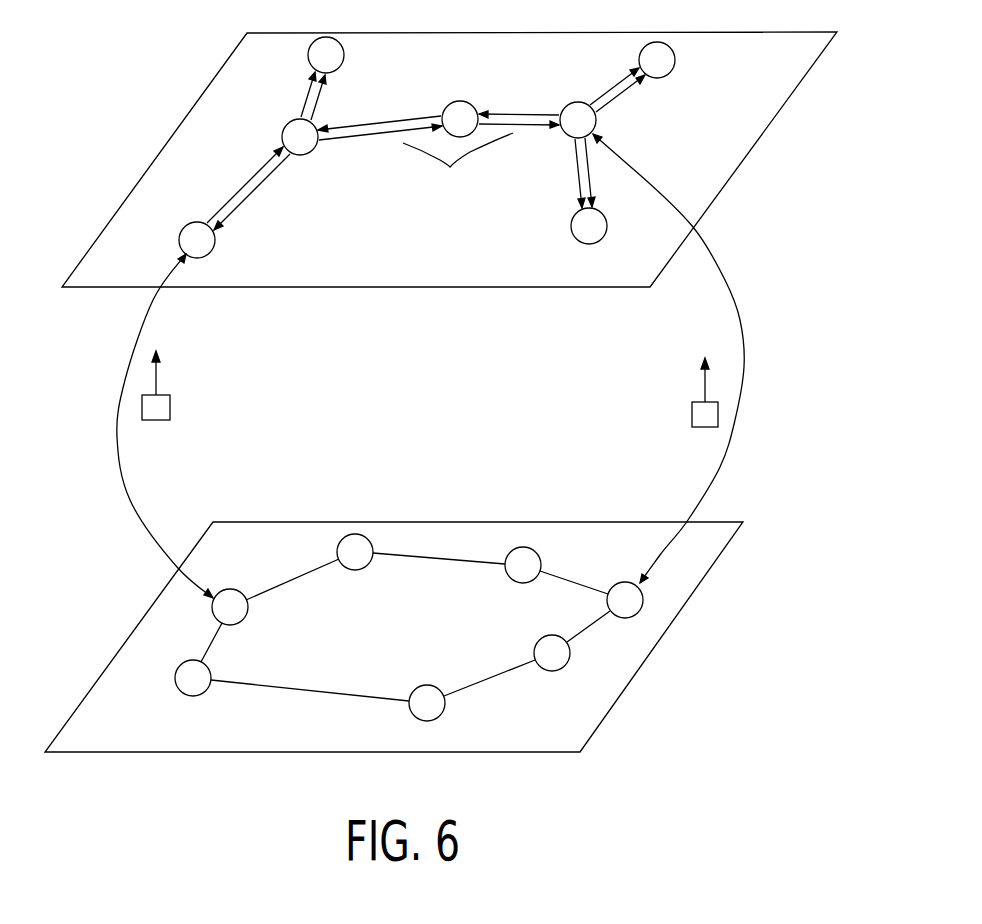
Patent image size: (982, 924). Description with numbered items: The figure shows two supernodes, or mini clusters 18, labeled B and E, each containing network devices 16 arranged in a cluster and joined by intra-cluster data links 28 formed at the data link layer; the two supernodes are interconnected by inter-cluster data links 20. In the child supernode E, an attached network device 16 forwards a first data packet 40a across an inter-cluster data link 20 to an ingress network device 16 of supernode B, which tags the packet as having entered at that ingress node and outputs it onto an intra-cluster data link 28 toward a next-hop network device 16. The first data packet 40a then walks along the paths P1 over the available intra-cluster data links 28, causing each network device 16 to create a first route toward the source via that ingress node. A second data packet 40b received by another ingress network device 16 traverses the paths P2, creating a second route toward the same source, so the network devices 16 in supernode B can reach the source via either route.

The network device 16 is at (213, 255).
The mini cluster 18 is at (232, 48).
The inter-cluster data link 20 is at (118, 460).
The intra-cluster data link 28 is at (233, 208).
The data packet 40a is at (170, 408).
The second data packet 40b is at (692, 412).
The paths P1 is at (660, 120).
The paths P2 is at (242, 215).